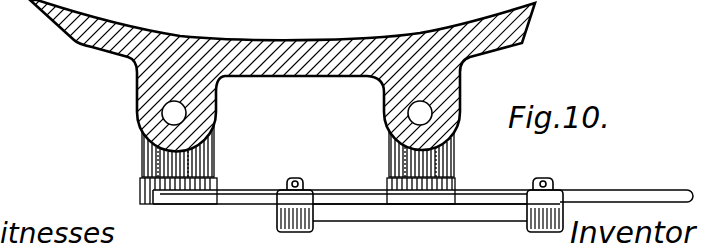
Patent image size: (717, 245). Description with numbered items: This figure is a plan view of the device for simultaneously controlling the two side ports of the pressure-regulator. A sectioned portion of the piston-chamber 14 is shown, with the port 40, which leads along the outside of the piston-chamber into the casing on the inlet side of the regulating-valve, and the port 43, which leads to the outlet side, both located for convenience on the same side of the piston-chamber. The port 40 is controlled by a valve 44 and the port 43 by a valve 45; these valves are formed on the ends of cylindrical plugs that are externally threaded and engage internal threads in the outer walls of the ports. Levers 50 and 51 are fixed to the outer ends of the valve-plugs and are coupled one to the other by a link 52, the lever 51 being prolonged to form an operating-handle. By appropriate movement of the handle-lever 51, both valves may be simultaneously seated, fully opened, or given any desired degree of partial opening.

The piston-chamber 14 is at (355, 122).
The port 40 is at (421, 113).
The port 43 is at (172, 113).
The valve 44 is at (427, 158).
The valve 45 is at (141, 162).
The lever 50 is at (356, 212).
The lever 51 is at (626, 184).
The link 52 is at (420, 224).